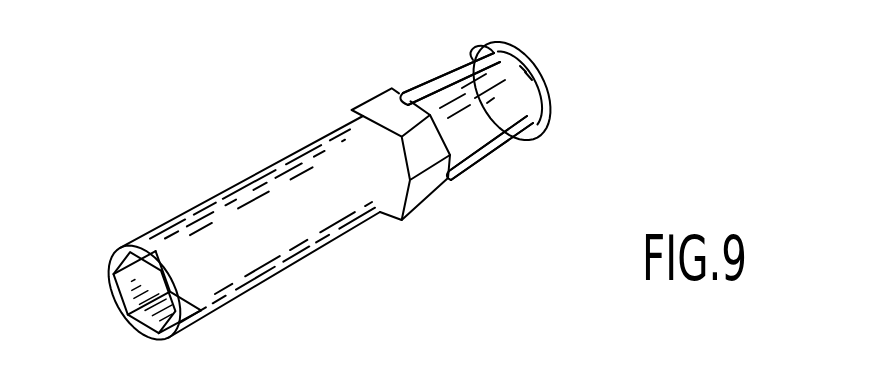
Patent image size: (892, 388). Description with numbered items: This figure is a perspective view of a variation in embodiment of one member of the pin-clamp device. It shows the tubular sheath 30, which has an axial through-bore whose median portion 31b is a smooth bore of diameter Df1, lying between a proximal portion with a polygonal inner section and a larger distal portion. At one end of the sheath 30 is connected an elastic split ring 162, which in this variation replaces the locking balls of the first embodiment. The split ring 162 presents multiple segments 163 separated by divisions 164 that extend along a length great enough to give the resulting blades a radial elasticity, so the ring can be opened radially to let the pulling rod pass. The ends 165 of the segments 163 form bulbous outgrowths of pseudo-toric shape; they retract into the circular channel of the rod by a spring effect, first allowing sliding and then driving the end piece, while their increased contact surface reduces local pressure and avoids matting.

The tubular sheath 30 is at (310, 257).
The median portion 31b is at (140, 281).
The elastic split ring 162 is at (472, 172).
The segments 163 is at (455, 98).
The divisions 164 is at (493, 137).
The ends 165 is at (548, 80).